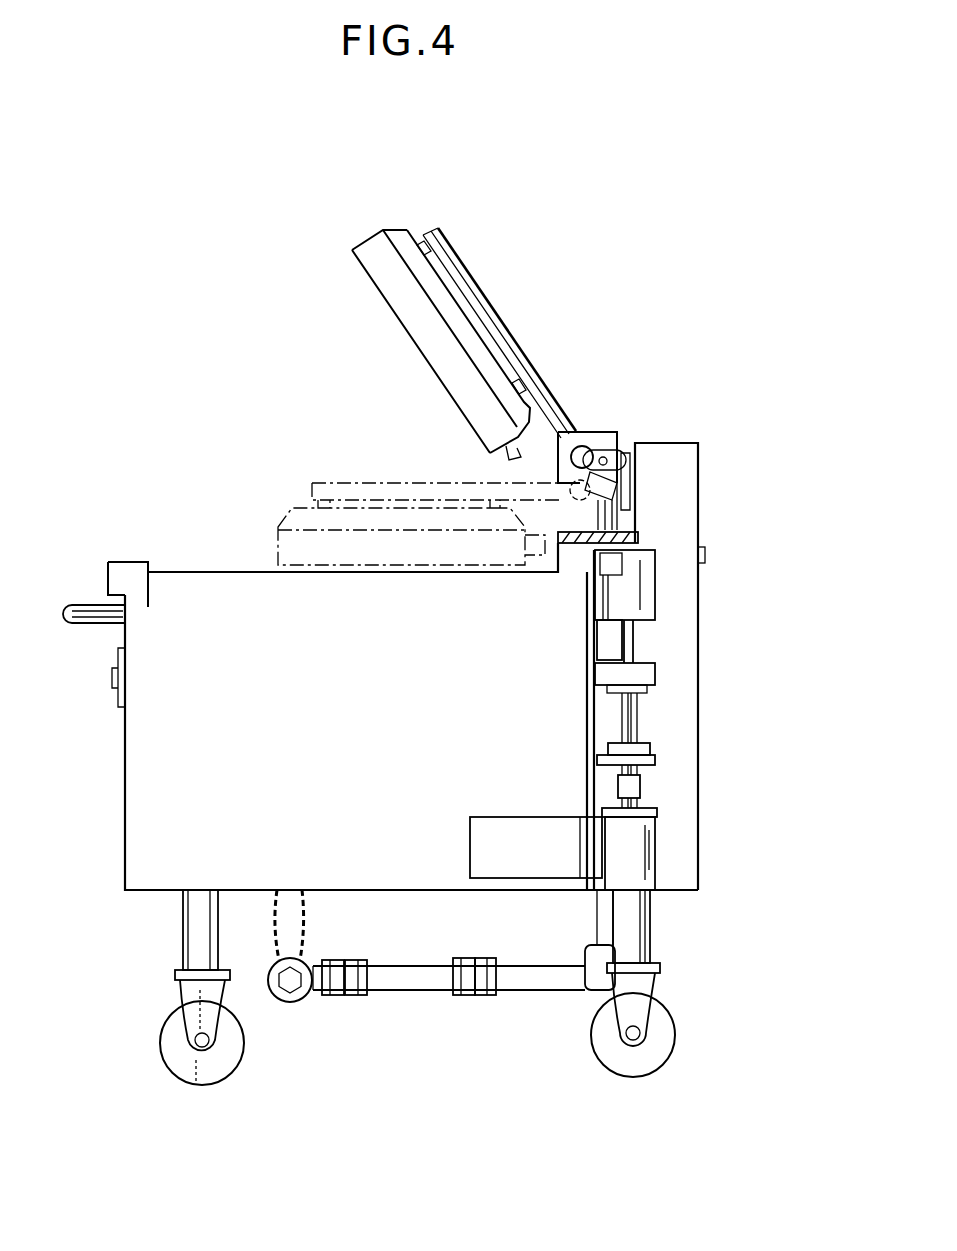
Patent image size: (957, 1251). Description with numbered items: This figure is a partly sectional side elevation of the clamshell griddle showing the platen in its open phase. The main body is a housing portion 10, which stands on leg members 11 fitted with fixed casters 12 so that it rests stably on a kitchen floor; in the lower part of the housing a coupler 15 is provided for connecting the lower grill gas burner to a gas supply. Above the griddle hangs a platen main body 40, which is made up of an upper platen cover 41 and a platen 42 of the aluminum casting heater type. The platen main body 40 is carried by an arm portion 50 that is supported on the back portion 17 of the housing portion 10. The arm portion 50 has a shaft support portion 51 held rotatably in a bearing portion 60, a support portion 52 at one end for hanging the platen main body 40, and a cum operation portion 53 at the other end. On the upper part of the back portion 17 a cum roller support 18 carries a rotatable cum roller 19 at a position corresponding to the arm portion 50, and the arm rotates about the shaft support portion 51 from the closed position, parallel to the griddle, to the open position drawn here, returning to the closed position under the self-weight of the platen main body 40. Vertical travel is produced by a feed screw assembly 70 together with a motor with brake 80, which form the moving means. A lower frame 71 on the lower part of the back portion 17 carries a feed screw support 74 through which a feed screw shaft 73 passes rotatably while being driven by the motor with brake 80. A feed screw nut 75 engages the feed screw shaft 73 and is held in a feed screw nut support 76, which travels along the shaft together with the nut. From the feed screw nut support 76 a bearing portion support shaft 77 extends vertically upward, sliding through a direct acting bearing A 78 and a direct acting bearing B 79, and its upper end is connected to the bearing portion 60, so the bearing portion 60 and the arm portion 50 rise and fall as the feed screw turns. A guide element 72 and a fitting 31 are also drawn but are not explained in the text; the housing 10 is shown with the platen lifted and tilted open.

The housing portion 10 is at (101, 754).
The leg member 11 is at (190, 925).
The fixed caster 12 is at (185, 1060).
The coupler 15 is at (295, 1005).
The back portion 17 is at (680, 457).
The cum roller support 18 is at (627, 447).
The cum roller 19 is at (618, 457).
The knob 31 is at (707, 556).
The platen main body 40 is at (391, 292).
The upper platen cover 41 is at (392, 235).
The platen 42 is at (355, 248).
The arm portion 50 is at (506, 330).
The shaft support portion 51 is at (584, 448).
The support portion 52 is at (467, 282).
The cum operation portion 53 is at (617, 485).
The bearing portion 60 is at (656, 442).
The feed screw assembly 70 is at (688, 697).
The lower frame 71 is at (640, 780).
The guide block 72 is at (607, 603).
The feed screw shaft 73 is at (650, 748).
The feed screw support 74 is at (653, 758).
The feed screw nut 75 is at (627, 720).
The feed screw nut support 76 is at (648, 676).
The bearing portion support shaft 77 is at (610, 637).
The direct acting bearing A 78 is at (640, 635).
The direct acting bearing B 79 is at (606, 560).
The motor with brake 80 is at (676, 864).